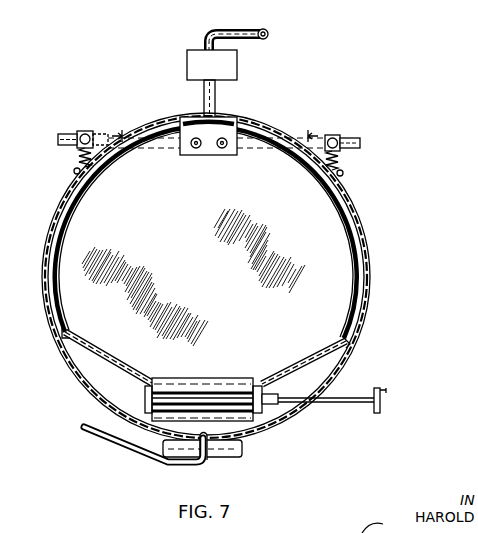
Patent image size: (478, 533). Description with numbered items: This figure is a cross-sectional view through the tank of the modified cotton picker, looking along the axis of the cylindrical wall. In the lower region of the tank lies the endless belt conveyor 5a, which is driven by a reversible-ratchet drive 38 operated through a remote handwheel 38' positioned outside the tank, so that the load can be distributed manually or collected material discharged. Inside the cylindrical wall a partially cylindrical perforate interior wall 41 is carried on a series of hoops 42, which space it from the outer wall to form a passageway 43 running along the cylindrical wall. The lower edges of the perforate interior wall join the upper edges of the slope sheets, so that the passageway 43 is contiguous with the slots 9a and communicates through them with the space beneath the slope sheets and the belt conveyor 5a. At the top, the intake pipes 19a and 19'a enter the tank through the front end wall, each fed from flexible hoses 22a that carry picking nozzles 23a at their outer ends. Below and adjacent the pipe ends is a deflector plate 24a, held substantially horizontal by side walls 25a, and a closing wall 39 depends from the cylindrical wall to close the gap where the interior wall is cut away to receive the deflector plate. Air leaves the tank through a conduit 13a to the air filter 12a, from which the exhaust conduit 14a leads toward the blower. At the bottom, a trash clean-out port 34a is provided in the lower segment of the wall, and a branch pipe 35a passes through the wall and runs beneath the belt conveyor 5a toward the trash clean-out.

The exhaust conduit 14a is at (209, 33).
The air filter 12a is at (187, 63).
The conduit 13a is at (204, 97).
The closing wall 39 is at (222, 121).
The deflector plate 24a is at (208, 157).
The side wall 25a is at (238, 152).
The intake pipe 19'a is at (77, 139).
The intake pipe 19a is at (340, 139).
The flexible hose 22a is at (343, 160).
The picking nozzle 23a is at (345, 175).
The passageway 43 is at (361, 229).
The perforate interior wall 41 is at (356, 266).
The longitudinal slot 9a is at (348, 340).
The hoop 42 is at (348, 350).
The remote handwheel 38' is at (395, 403).
The reversible-ratchet drive 38 is at (318, 418).
The belt conveyor 5a is at (243, 423).
The trash clean-out port 34a is at (232, 458).
The branch pipe 35a is at (97, 440).